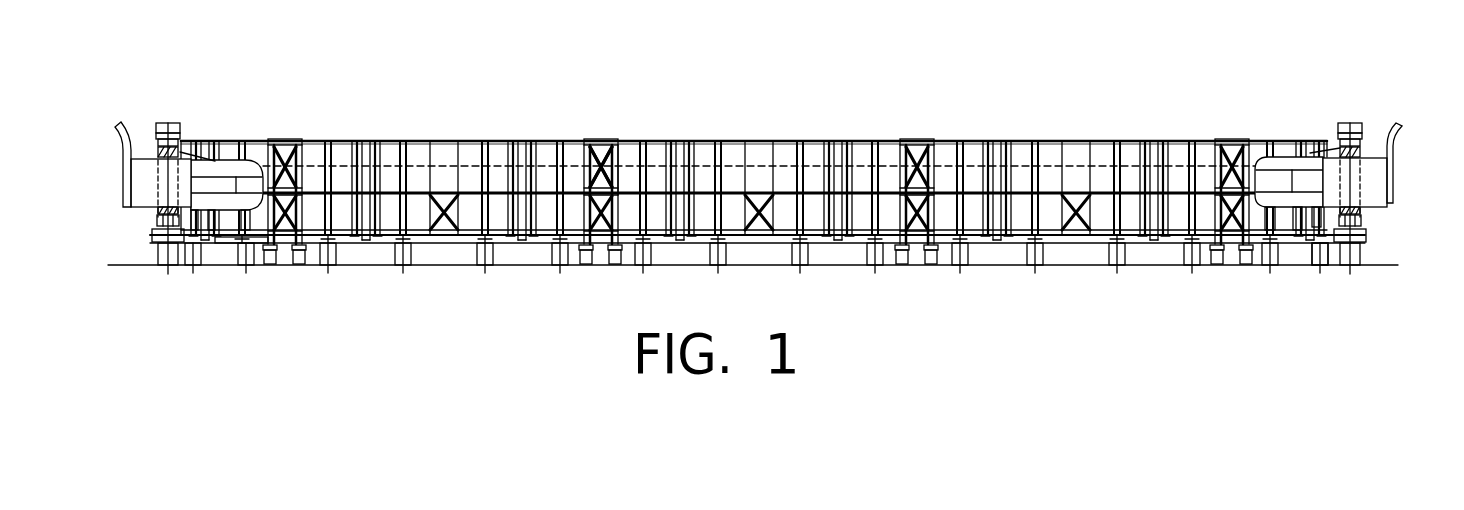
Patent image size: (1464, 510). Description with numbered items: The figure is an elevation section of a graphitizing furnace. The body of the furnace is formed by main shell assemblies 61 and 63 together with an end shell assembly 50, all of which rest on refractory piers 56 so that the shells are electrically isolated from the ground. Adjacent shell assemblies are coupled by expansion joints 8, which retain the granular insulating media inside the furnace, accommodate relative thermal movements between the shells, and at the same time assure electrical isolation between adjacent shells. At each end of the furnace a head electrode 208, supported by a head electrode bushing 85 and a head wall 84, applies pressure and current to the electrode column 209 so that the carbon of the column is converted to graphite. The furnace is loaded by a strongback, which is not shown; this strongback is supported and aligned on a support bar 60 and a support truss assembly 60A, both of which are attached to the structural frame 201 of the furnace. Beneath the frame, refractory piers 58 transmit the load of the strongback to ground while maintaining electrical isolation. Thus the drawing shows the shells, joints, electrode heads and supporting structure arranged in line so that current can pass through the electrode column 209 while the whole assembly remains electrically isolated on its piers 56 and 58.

The expansion joints 8 is at (838, 140).
The end shell assembly 50 is at (1332, 137).
The refractory piers 56 is at (170, 257).
The refractory piers 58 is at (585, 262).
The support bar 60 is at (600, 140).
The support truss assembly 60A is at (623, 155).
The main shell assembly 61 is at (310, 140).
The main shell assembly 63 is at (443, 140).
The head wall 84 is at (1353, 121).
The head electrode bushing 85 is at (157, 210).
The structural frame 201 is at (820, 233).
The head electrodes 208 is at (147, 159).
The electrode column 209 is at (225, 177).